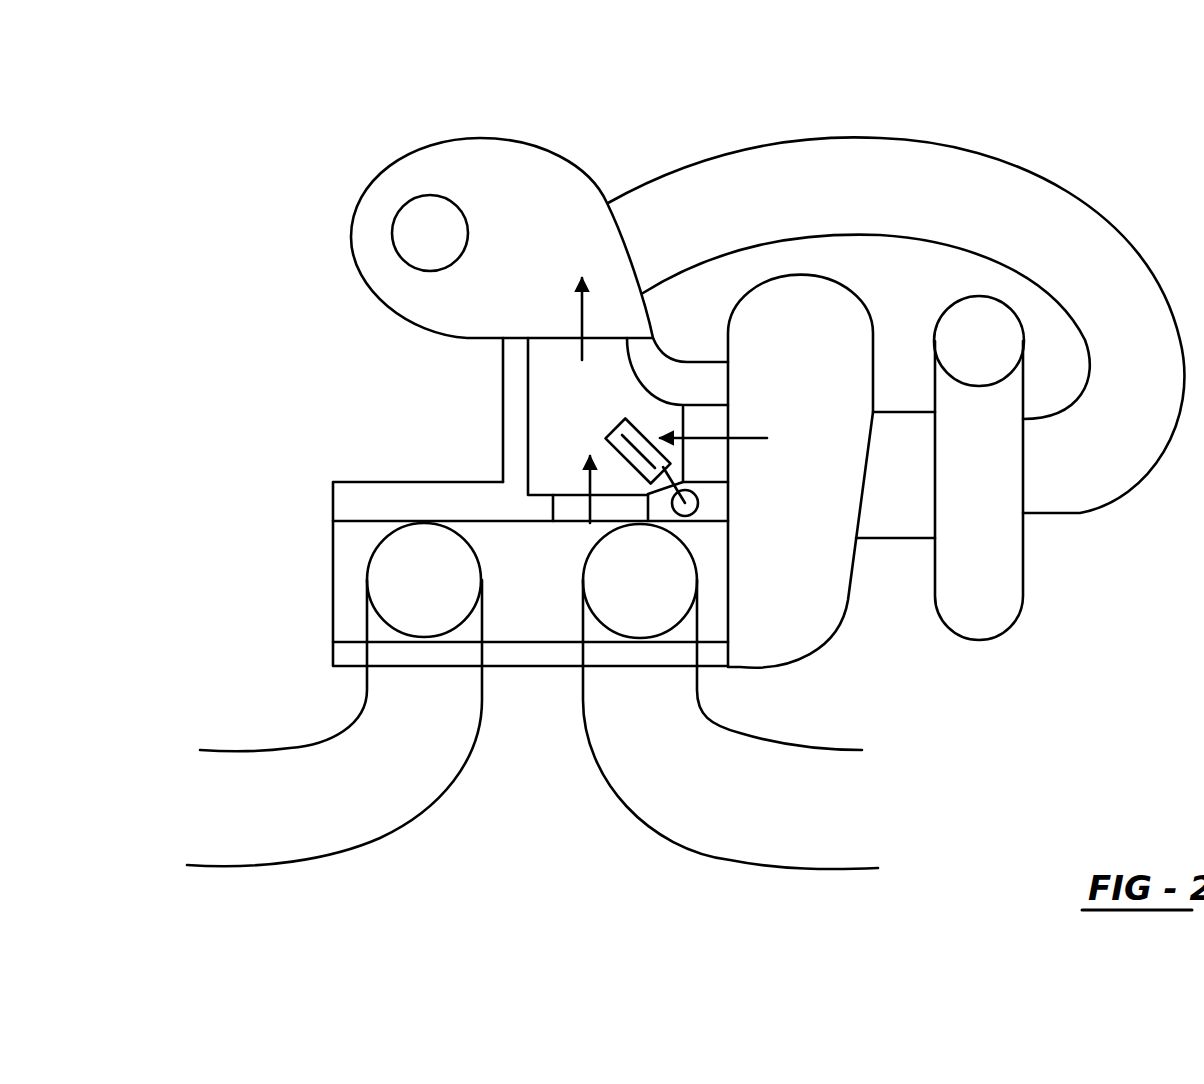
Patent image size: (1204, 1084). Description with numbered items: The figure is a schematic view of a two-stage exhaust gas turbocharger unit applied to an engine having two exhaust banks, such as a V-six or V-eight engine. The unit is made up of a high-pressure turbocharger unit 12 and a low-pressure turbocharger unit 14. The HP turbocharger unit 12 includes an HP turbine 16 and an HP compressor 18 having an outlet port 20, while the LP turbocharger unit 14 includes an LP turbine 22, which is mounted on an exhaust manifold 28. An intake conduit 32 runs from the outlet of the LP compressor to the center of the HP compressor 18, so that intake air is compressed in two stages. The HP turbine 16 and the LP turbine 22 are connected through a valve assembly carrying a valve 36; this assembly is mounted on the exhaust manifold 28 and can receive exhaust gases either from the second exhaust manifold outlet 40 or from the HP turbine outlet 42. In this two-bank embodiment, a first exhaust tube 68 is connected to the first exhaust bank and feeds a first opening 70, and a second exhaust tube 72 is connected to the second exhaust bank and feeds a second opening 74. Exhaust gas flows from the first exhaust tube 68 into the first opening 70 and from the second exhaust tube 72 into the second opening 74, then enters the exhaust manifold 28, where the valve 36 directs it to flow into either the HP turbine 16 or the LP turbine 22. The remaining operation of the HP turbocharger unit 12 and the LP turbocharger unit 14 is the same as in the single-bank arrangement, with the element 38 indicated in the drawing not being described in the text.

The high-pressure turbocharger unit 12 is at (930, 660).
The low-pressure turbocharger unit 14 is at (458, 112).
The HP turbine 16 is at (820, 302).
The HP compressor 18 is at (1003, 555).
The outlet port 20 is at (997, 320).
The LP turbine 22 is at (417, 305).
The exhaust manifold 28 is at (332, 485).
The intake conduit 32 is at (922, 170).
The valve 36 is at (610, 424).
The check valve passage 38 is at (727, 567).
The second exhaust manifold outlet 40 is at (575, 497).
The HP turbine outlet 42 is at (727, 428).
The first exhaust tube 68 is at (348, 810).
The first opening 70 is at (407, 570).
The second exhaust tube 72 is at (797, 777).
The second opening 74 is at (600, 572).